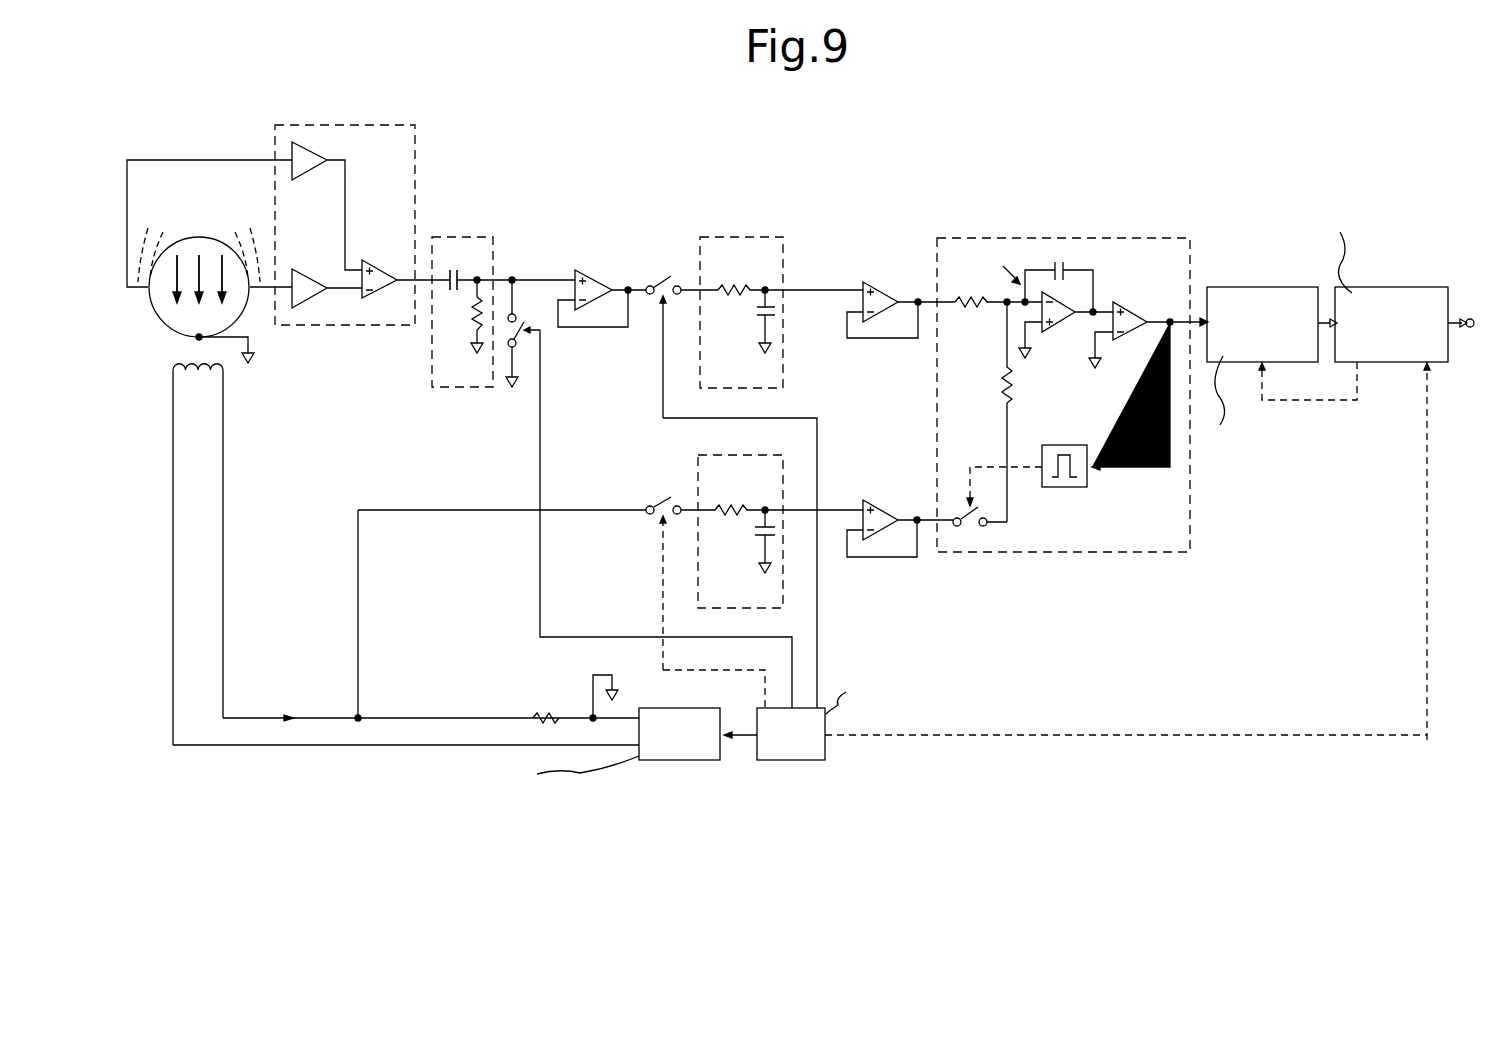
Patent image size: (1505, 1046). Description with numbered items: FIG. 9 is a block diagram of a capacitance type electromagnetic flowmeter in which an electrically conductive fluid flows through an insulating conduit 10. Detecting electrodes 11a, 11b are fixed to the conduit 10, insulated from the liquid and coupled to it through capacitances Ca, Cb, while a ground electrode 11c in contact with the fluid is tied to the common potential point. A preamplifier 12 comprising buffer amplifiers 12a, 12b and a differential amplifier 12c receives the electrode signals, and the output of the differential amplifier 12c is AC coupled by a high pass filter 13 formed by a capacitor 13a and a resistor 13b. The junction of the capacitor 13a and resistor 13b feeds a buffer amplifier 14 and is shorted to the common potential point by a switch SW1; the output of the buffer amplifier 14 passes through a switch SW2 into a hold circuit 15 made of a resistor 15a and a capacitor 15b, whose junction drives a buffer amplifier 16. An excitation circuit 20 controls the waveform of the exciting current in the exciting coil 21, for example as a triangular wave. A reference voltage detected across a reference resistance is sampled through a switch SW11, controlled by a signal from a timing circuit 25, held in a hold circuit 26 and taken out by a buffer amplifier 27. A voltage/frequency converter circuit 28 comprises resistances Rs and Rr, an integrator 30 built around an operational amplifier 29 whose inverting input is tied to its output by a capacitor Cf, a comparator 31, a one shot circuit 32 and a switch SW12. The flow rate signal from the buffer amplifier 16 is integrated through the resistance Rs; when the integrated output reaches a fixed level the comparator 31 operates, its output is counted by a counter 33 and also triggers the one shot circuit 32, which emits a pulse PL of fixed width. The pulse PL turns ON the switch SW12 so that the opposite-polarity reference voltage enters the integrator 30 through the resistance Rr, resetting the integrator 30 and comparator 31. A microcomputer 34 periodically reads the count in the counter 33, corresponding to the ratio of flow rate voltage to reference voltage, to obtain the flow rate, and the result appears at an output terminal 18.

The insulating conduit 10 is at (199, 237).
The detecting electrode 11a is at (147, 300).
The detecting electrode 11b is at (251, 308).
The ground electrode 11c is at (196, 338).
The preamplifier 12 is at (300, 124).
The buffer amplifier 12a is at (318, 158).
The buffer amplifier 12b is at (312, 298).
The differential amplifier 12c is at (380, 268).
The high pass filter 13 is at (458, 236).
The capacitor 13a is at (454, 270).
The resistor 13b is at (475, 312).
The buffer amplifier 14 is at (589, 276).
The hold circuit 15 is at (716, 236).
The resistor 15a is at (729, 282).
The capacitor 15b is at (756, 322).
The buffer amplifier 16 is at (885, 282).
The output terminal 18 is at (1472, 318).
The excitation circuit 20 is at (700, 761).
The exciting coil 21 is at (186, 372).
The timing circuit 25 is at (805, 761).
The hold circuit 26 is at (720, 455).
The buffer amplifier 27 is at (885, 500).
The voltage/frequency converter circuit 28 is at (1003, 237).
The operational amplifier 29 is at (1060, 327).
The integrator 30 is at (1004, 263).
The comparator 31 is at (1135, 336).
The one shot circuit 32 is at (1077, 488).
The counter 33 is at (1258, 287).
The microcomputer 34 is at (1388, 287).
The capacitance Ca is at (151, 247).
The capacitance Cb is at (247, 247).
The capacitor Cf is at (1060, 281).
The resistance Rs is at (998, 290).
The resistance Rr is at (992, 410).
The switch SW1 is at (643, 492).
The switch SW2 is at (668, 280).
The switch SW11 is at (659, 498).
The switch SW12 is at (984, 527).
The pulse PL is at (1004, 475).